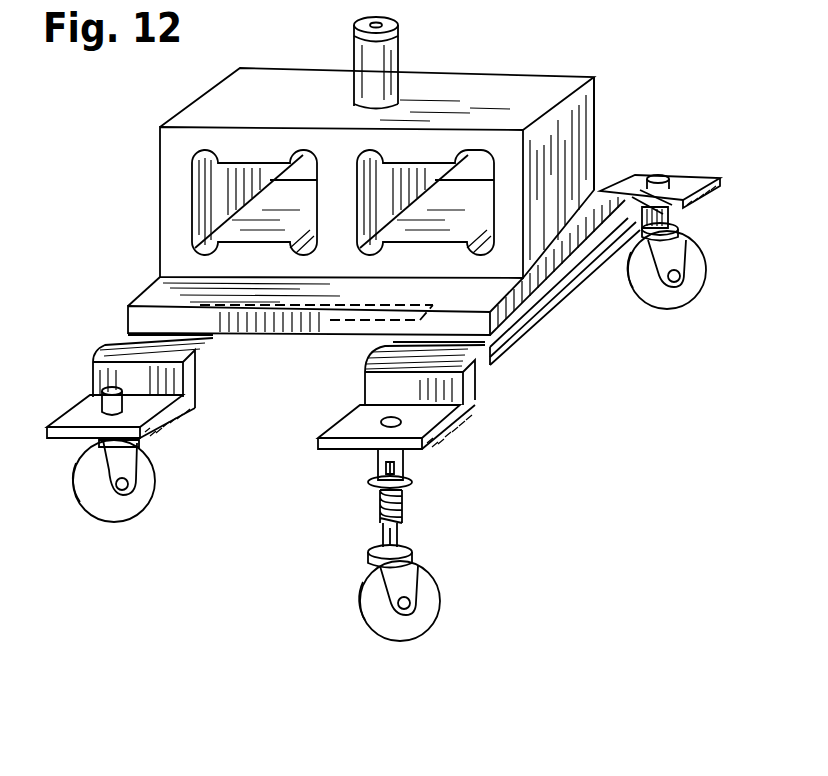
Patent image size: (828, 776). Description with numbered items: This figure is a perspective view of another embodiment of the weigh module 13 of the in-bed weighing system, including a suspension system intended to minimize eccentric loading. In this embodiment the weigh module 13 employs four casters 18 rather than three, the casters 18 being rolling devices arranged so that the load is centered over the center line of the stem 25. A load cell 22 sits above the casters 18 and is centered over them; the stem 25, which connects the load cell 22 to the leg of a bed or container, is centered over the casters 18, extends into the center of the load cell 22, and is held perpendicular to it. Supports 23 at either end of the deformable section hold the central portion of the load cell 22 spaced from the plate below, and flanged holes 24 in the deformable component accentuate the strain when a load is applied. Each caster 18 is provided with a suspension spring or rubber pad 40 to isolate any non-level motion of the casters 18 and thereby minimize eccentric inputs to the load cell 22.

The weigh module 13 is at (597, 142).
The load cell 22 is at (573, 108).
The stem 25 is at (398, 62).
The flanged holes 24 is at (210, 209).
The supports 23 is at (550, 275).
The suspension spring 40 is at (203, 338).
The caster 18 is at (155, 485).